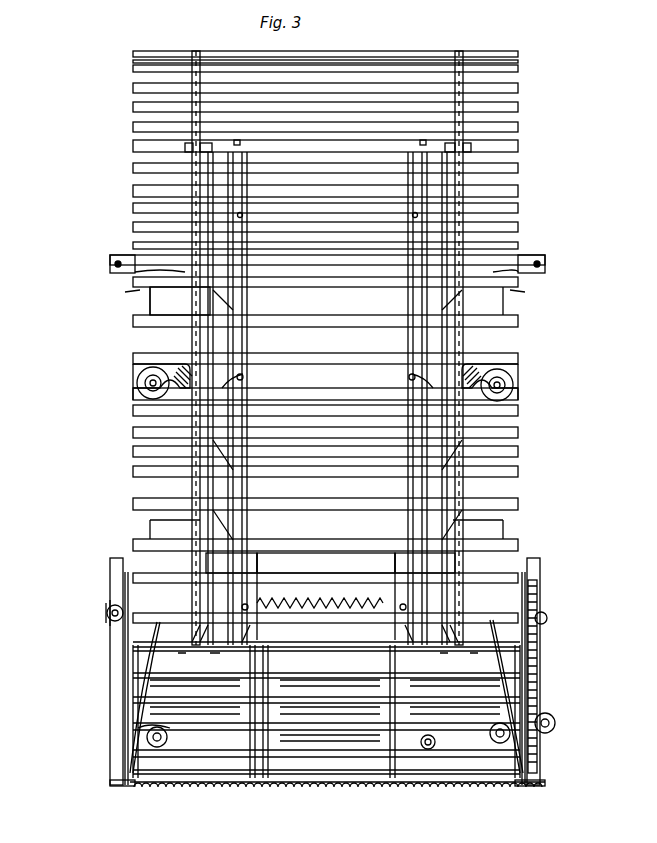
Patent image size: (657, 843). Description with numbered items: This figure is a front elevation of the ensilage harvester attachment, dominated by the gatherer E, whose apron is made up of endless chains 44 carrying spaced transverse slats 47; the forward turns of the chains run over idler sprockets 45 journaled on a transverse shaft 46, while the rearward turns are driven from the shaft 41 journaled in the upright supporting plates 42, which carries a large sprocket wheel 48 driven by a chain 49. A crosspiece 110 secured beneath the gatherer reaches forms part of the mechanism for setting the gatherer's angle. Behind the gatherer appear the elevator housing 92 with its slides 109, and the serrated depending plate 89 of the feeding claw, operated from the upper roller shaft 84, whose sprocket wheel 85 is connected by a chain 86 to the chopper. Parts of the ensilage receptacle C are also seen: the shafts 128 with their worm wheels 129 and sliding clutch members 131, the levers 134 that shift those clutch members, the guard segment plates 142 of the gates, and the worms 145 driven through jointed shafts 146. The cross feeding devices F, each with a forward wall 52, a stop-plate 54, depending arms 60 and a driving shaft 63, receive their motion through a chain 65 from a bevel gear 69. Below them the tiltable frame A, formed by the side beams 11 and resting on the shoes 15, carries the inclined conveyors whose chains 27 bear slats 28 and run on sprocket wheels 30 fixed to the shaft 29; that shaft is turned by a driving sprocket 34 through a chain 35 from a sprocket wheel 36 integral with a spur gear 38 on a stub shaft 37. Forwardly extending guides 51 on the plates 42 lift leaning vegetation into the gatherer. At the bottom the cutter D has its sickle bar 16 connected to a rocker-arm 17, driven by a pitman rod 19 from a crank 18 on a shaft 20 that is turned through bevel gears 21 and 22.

The idler sprockets 45 is at (196, 50).
The transverse shaft 46 is at (185, 148).
The transverse slats 47 is at (518, 127).
The crosspiece 110 is at (513, 260).
The segment plates 142 is at (150, 302).
The slides 109 is at (240, 300).
The elevator housing 92 is at (335, 398).
The sliding clutch member 131 is at (135, 368).
The worms 145 is at (185, 368).
The levers 134 is at (247, 378).
The worm wheel 129 is at (513, 378).
The shafts 128 is at (140, 392).
The endless chain 44 is at (520, 490).
The jointed shaft 146 is at (232, 538).
The forward wall 52 is at (354, 596).
The depending plate 89 is at (326, 563).
The shaft 63 is at (242, 607).
The stop-plate 54 is at (326, 632).
The depending arms 60 is at (328, 653).
The side beams 11 is at (110, 698).
The supporting plates 42 is at (123, 655).
The sprocket wheel 48 is at (540, 580).
The shaft 41 is at (547, 616).
The chain 49 is at (540, 640).
The sprocket wheel 85 is at (115, 605).
The shaft 84 is at (108, 615).
The chain 86 is at (112, 622).
The guides 51 is at (135, 738).
The bevel gear 69 is at (138, 725).
The ensilage receptacle C is at (182, 785).
The chain 65 is at (328, 737).
The chains 27 is at (263, 718).
The slats or cleats 28 is at (208, 760).
The bevel gear 22 is at (440, 718).
The bevel gear 21 is at (436, 742).
The shoes 15 is at (112, 783).
The sickle bar 16 is at (262, 788).
The sprocket wheels 30 is at (132, 786).
The shaft 29 is at (150, 782).
The shaft 20 is at (400, 778).
The crank 18 is at (418, 778).
The pitman rod 19 is at (490, 785).
The cutter D is at (402, 800).
The rocker-arm 17 is at (548, 782).
The sprocket wheel 36 is at (542, 700).
The spur gear 38 is at (550, 715).
The stub shaft 37 is at (552, 722).
The chain 35 is at (548, 740).
The driving sprocket 34 is at (545, 750).
The tiltable frame A is at (100, 694).
The gatherer E is at (538, 182).
The cross feeding devices F is at (126, 540).